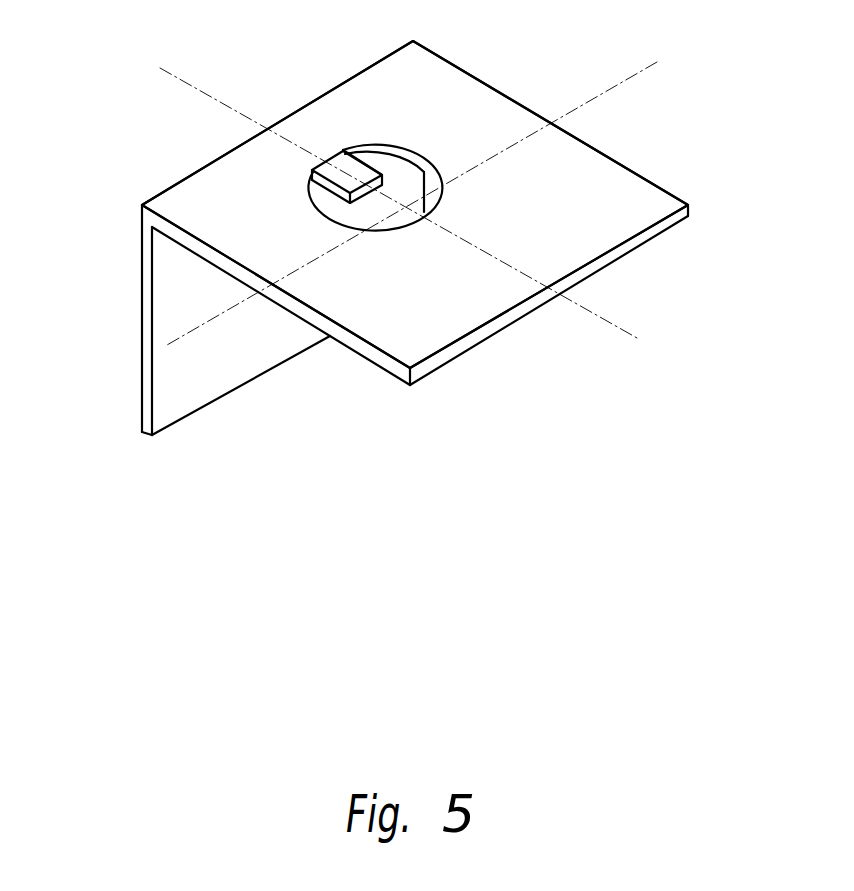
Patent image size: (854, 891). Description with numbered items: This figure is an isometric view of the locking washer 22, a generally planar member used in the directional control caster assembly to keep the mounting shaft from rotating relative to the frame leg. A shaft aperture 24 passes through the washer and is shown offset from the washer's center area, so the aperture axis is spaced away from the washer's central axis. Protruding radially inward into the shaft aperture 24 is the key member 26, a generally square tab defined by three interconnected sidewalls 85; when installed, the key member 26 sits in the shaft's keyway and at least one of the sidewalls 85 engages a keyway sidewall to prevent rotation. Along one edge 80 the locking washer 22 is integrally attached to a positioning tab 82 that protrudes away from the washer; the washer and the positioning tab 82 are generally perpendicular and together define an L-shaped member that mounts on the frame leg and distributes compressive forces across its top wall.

The locking washer 22 is at (553, 250).
The shaft aperture 24 is at (393, 232).
The key member 26 is at (357, 203).
The edge 80 is at (192, 198).
The positioning tab 82 is at (173, 263).
The sidewalls 85 is at (330, 188).